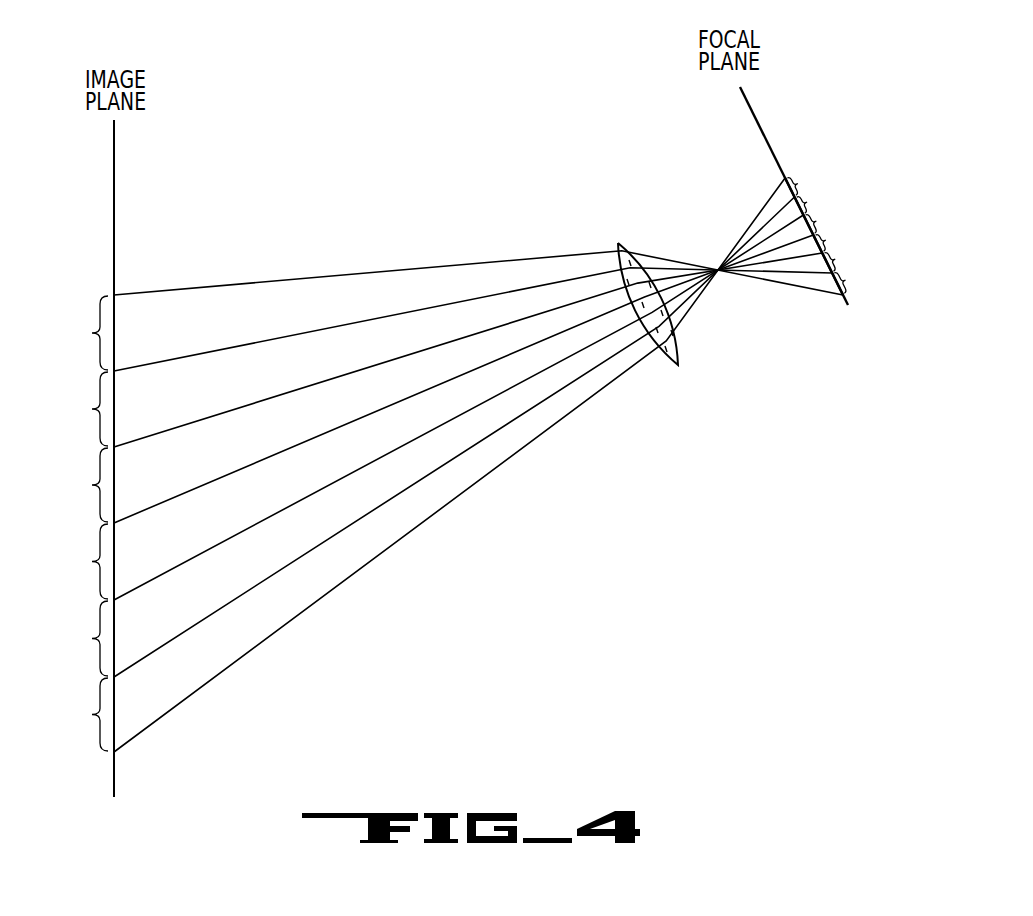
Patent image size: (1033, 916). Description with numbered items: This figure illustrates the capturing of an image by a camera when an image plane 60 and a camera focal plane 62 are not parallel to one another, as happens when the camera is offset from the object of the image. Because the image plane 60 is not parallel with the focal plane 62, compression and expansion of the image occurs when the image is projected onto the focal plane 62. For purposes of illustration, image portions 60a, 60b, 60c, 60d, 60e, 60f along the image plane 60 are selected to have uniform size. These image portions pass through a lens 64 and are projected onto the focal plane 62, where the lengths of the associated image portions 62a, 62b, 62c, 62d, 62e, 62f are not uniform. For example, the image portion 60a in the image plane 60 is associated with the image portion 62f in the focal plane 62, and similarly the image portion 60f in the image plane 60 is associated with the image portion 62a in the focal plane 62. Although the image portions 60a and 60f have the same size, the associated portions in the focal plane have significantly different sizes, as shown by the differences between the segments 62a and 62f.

The image plane 60 is at (114, 170).
The image portion 60a is at (92, 333).
The image portion 60b is at (92, 409).
The image portion 60c is at (92, 485).
The image portion 60d is at (92, 562).
The image portion 60e is at (92, 638).
The image portion 60f is at (92, 714).
The camera focal plane 62 is at (749, 105).
The image portion 62a is at (798, 184).
The image portion 62b is at (807, 202).
The image portion 62c is at (816, 221).
The image portion 62d is at (826, 240).
The image portion 62e is at (835, 259).
The image portion 62f is at (846, 280).
The lens 64 is at (618, 243).